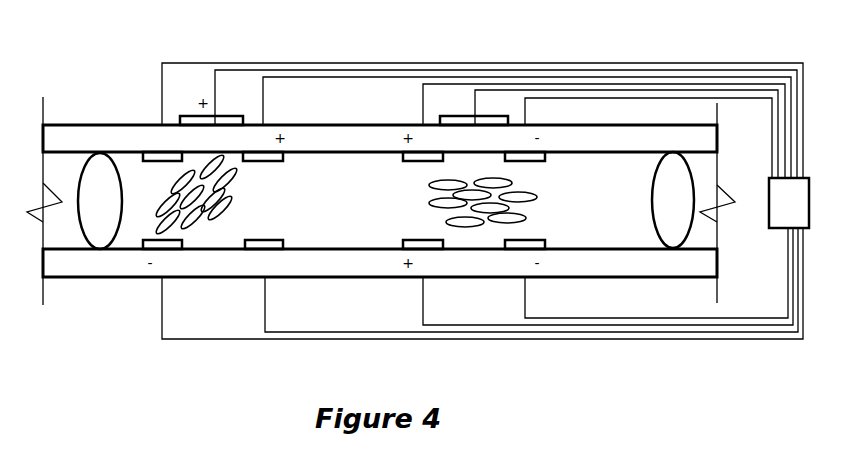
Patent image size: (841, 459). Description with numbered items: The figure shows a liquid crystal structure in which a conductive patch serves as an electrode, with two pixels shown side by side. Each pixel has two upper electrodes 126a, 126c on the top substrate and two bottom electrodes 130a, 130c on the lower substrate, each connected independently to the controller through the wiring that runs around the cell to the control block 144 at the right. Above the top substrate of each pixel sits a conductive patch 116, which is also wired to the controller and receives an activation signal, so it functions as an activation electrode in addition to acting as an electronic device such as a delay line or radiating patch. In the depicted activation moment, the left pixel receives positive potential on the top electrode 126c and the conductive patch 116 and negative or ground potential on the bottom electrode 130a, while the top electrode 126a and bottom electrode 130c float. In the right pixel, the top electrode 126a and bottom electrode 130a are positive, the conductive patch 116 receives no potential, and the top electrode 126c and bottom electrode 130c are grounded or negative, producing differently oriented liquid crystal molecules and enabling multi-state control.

The conductive patch 116 is at (235, 118).
The top electrode 126a is at (147, 153).
The top electrode 126c is at (263, 150).
The bottom electrode 130a is at (147, 250).
The bottom electrode 130c is at (262, 277).
The controller 144 is at (690, 173).